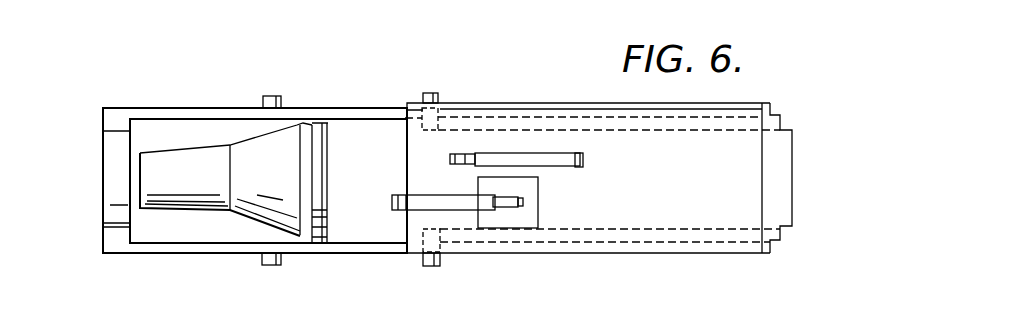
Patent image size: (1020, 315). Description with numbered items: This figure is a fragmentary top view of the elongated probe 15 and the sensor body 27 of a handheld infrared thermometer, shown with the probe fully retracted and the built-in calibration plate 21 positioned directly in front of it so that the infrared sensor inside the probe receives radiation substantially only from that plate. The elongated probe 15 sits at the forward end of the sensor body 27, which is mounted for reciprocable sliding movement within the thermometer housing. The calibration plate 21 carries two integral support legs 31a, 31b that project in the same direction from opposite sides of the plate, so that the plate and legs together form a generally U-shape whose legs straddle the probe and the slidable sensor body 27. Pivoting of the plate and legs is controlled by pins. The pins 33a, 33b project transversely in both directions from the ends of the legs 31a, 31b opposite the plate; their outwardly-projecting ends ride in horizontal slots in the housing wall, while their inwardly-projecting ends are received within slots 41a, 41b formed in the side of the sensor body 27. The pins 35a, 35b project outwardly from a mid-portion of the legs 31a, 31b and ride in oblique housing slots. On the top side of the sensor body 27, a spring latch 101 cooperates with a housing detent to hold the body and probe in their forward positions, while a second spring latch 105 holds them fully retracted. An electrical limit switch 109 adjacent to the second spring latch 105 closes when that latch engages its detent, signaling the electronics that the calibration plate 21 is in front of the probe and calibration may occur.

The calibration plate 21 is at (115, 155).
The support leg 31b is at (152, 108).
The support leg 31a is at (176, 252).
The elongated probe 15 is at (185, 168).
The pin 35b is at (281, 102).
The pin 35a is at (278, 261).
The sensor body 27 is at (372, 150).
The pin 33b is at (434, 98).
The pin 33a is at (442, 260).
The slot 41b is at (548, 130).
The slot 41a is at (563, 240).
The spring latch 101 is at (555, 162).
The second spring latch 105 is at (437, 205).
The electrical limit switch 109 is at (548, 220).